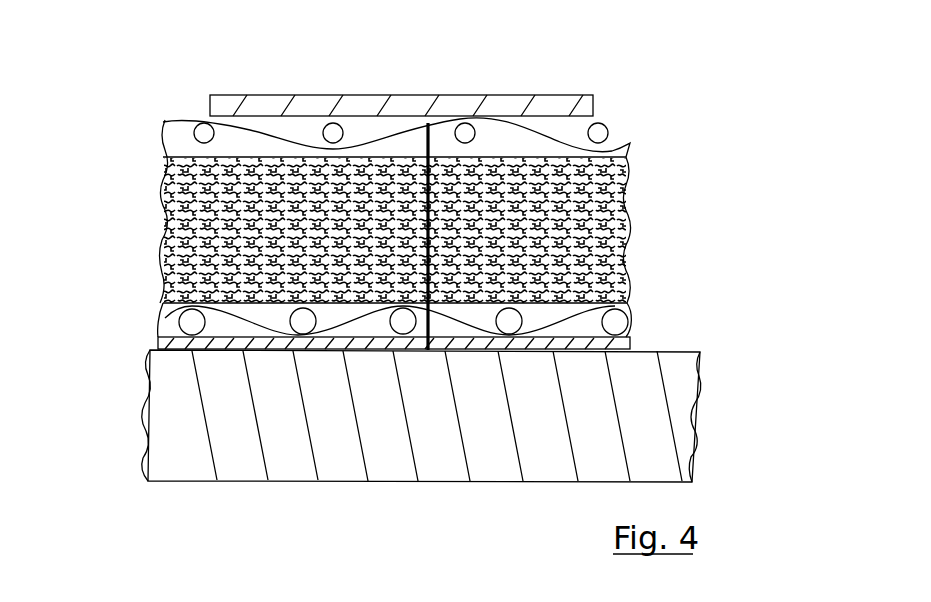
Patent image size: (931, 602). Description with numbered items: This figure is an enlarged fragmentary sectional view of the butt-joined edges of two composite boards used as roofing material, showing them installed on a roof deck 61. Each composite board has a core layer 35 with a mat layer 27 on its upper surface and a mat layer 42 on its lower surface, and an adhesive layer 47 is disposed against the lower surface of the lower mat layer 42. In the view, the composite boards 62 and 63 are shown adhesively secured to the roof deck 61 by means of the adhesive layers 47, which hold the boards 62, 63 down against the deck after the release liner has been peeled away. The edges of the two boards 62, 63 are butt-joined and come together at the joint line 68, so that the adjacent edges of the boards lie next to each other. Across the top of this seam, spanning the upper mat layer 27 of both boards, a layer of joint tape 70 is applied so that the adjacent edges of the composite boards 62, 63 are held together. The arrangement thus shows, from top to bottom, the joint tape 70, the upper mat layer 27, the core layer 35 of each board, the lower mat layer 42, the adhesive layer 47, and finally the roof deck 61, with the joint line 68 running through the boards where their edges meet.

The mat layer 27 is at (628, 143).
The foam layer 35 is at (628, 228).
The mat layer 42 is at (615, 306).
The adhesive layer 47 is at (632, 350).
The roof deck 61 is at (690, 426).
The composite board 62 is at (152, 263).
The composite board 63 is at (642, 266).
The joint line 68 is at (423, 162).
The joint tape 70 is at (528, 95).